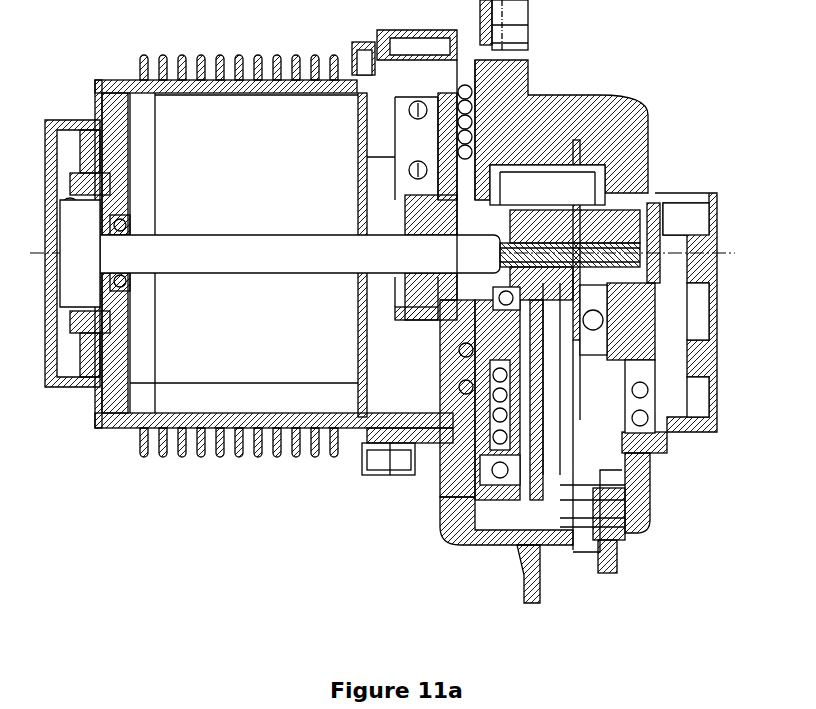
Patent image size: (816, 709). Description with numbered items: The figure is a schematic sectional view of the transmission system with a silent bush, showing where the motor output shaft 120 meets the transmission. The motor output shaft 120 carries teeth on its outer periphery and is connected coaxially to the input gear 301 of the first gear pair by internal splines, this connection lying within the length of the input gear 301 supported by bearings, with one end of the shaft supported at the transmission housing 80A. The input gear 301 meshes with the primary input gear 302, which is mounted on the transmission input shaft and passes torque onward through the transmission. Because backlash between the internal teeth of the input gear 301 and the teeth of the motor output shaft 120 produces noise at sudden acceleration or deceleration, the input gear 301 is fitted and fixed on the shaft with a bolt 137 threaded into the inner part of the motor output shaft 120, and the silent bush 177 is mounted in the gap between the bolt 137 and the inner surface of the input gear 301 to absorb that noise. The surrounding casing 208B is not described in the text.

The motor output shaft 120 is at (110, 253).
The gearbox housing 208B is at (537, 95).
The input gear 301 is at (546, 222).
The silent bush 177 is at (615, 235).
The bolt 137 is at (688, 240).
The transmission housing 80A is at (708, 462).
The primary input gear 302 is at (510, 468).